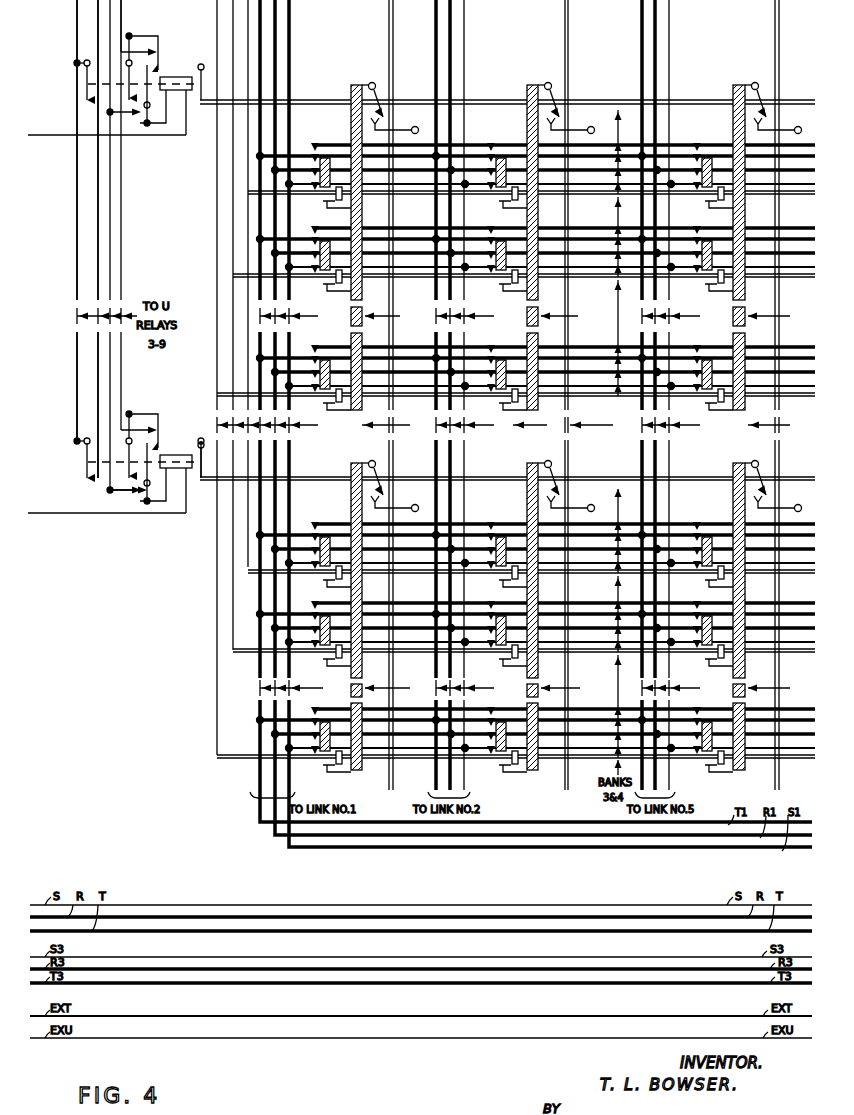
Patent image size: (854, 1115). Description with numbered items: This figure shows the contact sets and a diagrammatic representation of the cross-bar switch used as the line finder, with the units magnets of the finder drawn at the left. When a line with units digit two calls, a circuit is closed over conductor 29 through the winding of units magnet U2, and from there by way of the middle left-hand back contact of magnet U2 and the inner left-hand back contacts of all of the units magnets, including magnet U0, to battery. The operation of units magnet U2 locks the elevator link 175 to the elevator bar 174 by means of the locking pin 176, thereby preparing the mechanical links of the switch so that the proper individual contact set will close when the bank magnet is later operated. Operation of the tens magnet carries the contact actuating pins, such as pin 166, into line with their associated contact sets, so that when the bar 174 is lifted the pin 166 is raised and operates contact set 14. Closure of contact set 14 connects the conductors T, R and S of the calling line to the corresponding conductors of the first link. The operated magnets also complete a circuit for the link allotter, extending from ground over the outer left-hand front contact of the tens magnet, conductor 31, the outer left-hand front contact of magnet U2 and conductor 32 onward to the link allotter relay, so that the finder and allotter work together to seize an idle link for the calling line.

The contact set 14 is at (329, 158).
The conductor 29 is at (44, 135).
The conductor 31 is at (98, 41).
The conductor 32 is at (75, 35).
The contact actuating pin 166 is at (327, 208).
The elevator bar 174 is at (351, 92).
The elevator link 175 is at (397, 130).
The locking pin 176 is at (372, 82).
The units magnet U2 is at (165, 77).
The units magnet U0 is at (165, 455).